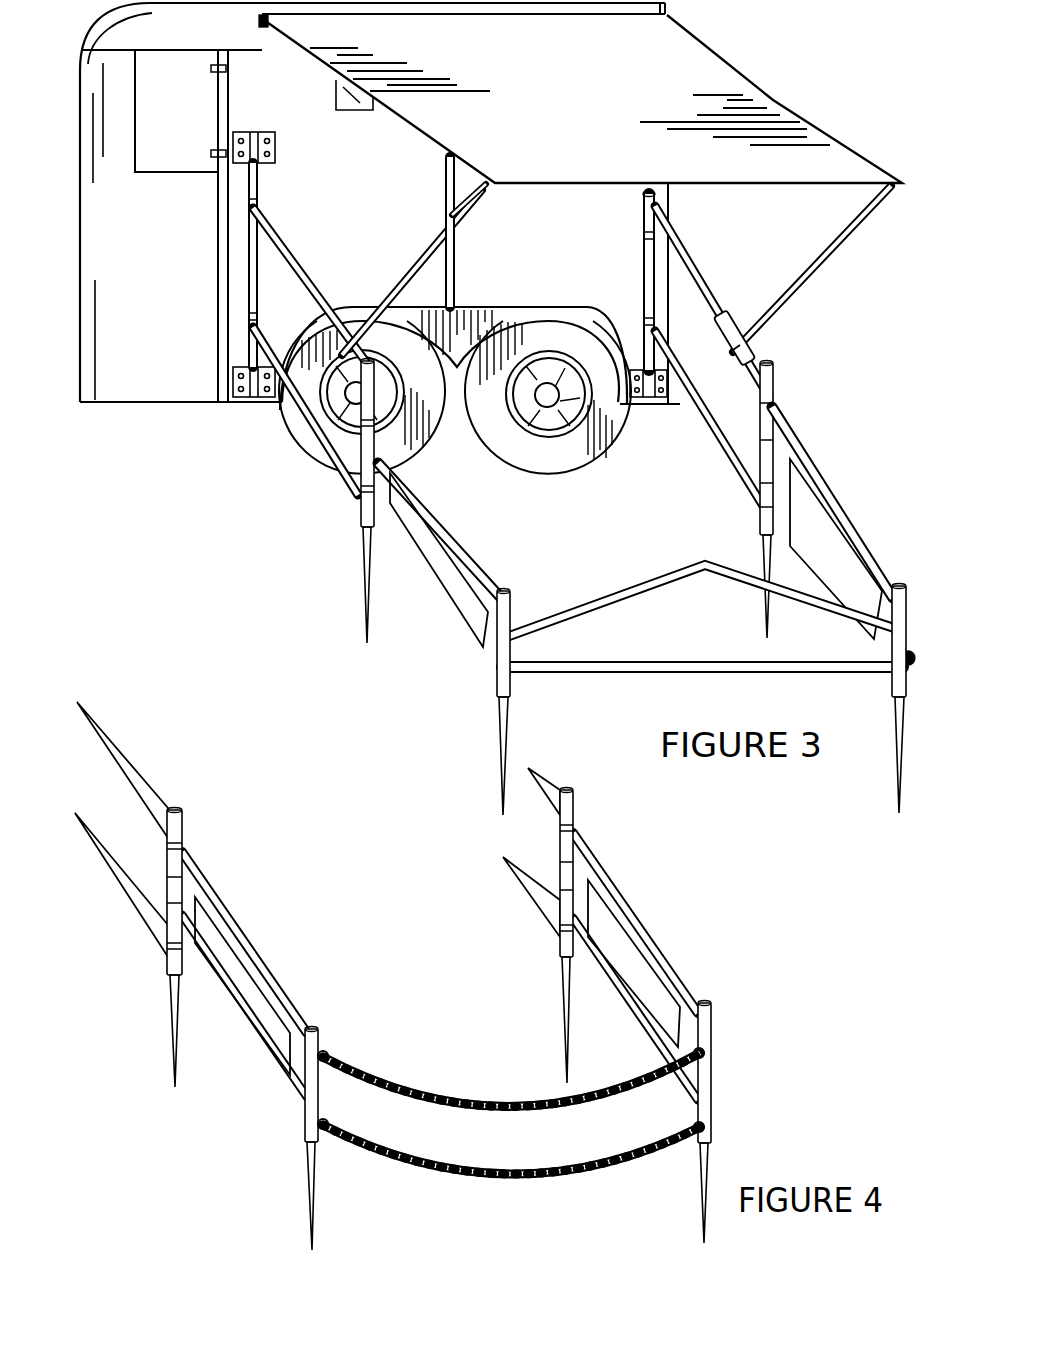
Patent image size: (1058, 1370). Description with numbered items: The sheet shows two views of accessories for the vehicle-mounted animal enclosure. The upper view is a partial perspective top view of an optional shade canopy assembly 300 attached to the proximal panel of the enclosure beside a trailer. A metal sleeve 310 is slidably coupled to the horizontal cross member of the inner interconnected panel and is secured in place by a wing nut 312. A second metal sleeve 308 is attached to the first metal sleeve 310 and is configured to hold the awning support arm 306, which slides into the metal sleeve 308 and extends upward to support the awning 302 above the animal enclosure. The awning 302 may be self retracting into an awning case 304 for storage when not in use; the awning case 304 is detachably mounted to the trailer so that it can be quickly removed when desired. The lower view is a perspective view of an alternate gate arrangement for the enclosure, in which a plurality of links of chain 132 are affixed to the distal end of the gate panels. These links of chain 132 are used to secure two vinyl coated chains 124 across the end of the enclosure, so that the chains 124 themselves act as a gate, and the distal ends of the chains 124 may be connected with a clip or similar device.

In FIG. 3, the shade canopy assembly 300 is at (717, 41).
In FIG. 3, the awning 302 is at (856, 158).
In FIG. 3, the awning case 304 is at (258, 23).
In FIG. 3, the awning support arm 306 is at (836, 240).
In FIG. 3, the second metal sleeve 308 is at (750, 339).
In FIG. 3, the metal sleeve 310 is at (733, 322).
In FIG. 3, the wing nut 312 is at (735, 362).
In FIG. 4, the vinyl coated chains 124 is at (507, 1092).
In FIG. 4, the links of chain 132 is at (330, 1048).